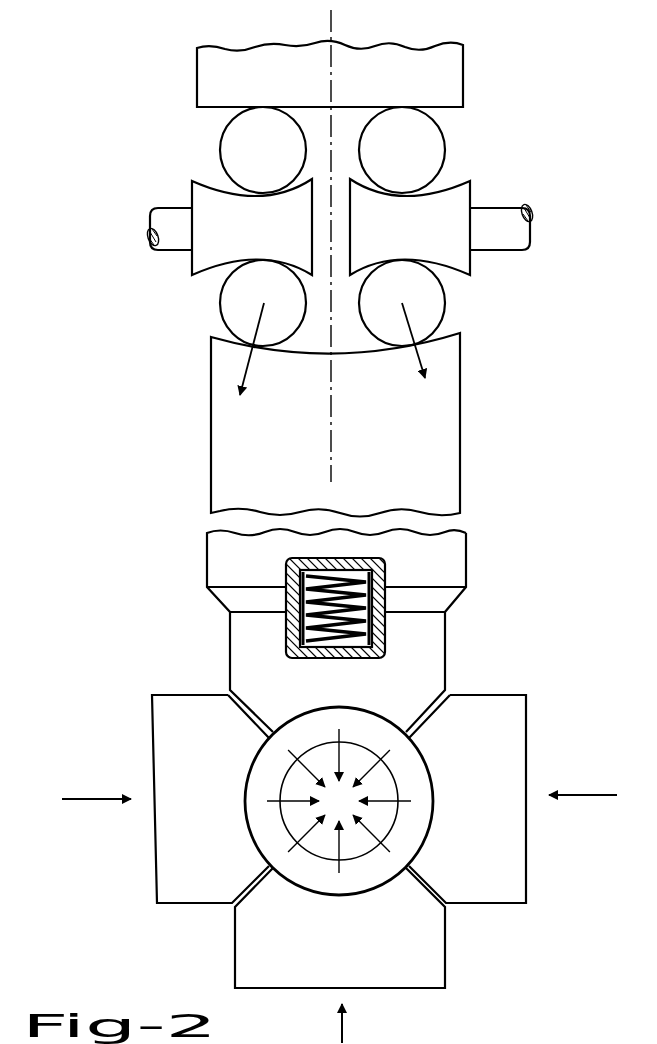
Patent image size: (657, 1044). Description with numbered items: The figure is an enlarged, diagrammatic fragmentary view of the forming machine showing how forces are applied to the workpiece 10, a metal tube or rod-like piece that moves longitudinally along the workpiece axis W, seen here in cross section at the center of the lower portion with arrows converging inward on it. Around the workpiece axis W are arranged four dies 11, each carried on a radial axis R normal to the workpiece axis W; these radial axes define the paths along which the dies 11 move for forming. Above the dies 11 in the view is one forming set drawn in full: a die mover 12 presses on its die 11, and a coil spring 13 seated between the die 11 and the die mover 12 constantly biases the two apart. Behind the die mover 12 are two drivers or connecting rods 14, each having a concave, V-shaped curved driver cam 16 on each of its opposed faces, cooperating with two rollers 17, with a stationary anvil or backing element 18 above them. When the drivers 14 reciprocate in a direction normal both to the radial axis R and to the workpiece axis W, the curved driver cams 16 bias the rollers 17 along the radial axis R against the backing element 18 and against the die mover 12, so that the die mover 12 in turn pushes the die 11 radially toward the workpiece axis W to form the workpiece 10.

The workpiece 10 is at (411, 772).
The die 11 is at (245, 647).
The die mover 12 is at (464, 461).
The coil spring 13 is at (360, 583).
The driver 14 is at (168, 250).
The driver cam 16 is at (212, 192).
The roller 17 is at (235, 143).
The backing element 18 is at (450, 67).
The radial axis R is at (334, 419).
The workpiece axis W is at (337, 801).